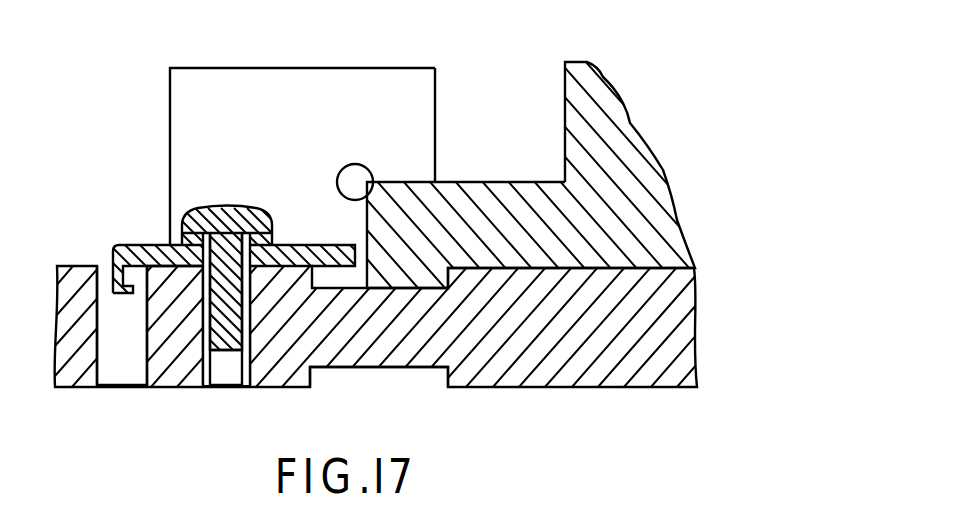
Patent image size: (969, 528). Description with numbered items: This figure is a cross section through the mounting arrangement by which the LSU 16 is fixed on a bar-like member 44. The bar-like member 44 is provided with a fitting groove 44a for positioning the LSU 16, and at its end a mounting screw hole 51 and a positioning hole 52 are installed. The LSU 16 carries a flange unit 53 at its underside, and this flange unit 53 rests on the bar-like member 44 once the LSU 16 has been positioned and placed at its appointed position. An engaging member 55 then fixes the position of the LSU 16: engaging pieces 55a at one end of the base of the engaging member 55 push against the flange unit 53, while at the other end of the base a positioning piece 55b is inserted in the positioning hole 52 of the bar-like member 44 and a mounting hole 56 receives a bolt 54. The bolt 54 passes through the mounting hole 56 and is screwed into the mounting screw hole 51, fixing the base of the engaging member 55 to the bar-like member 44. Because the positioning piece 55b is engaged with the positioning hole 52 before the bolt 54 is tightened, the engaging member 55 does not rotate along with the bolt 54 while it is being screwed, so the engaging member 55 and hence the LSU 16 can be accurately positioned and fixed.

The LSU 16 is at (593, 73).
The bar-like member 44 is at (522, 367).
The fitting groove 44a is at (377, 370).
The mounting screw hole 51 is at (225, 373).
The positioning hole 52 is at (123, 373).
The flange unit 53 is at (498, 190).
The bolt 54 is at (200, 212).
The engaging member 55 is at (185, 93).
The engaging piece 55a is at (432, 86).
The positioning piece 55b is at (113, 253).
The mounting hole 56 is at (283, 245).